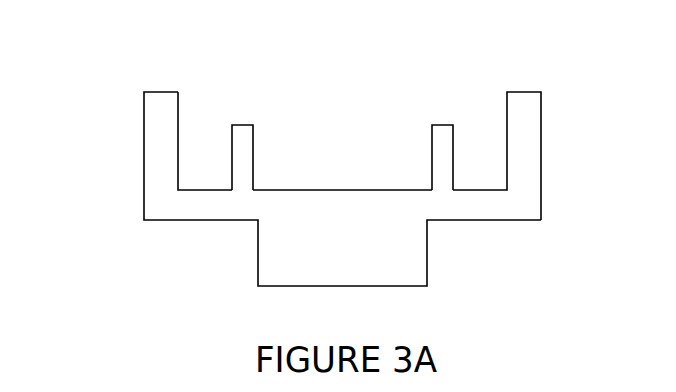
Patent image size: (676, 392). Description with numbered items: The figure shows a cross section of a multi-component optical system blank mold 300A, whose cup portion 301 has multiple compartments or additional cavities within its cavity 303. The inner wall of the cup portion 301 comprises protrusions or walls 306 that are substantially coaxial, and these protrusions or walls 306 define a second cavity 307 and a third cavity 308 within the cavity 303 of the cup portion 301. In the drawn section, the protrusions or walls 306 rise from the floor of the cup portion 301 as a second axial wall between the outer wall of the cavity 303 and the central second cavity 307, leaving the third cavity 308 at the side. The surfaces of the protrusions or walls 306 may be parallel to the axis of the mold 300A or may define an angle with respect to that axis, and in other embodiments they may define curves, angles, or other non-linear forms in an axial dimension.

The multi-component optical system blank mold 300A is at (90, 62).
The cup portion 301 is at (551, 124).
The cavity 303 is at (466, 105).
The protrusions or walls 306 is at (241, 147).
The second cavity 307 is at (335, 145).
The third cavity 308 is at (196, 142).